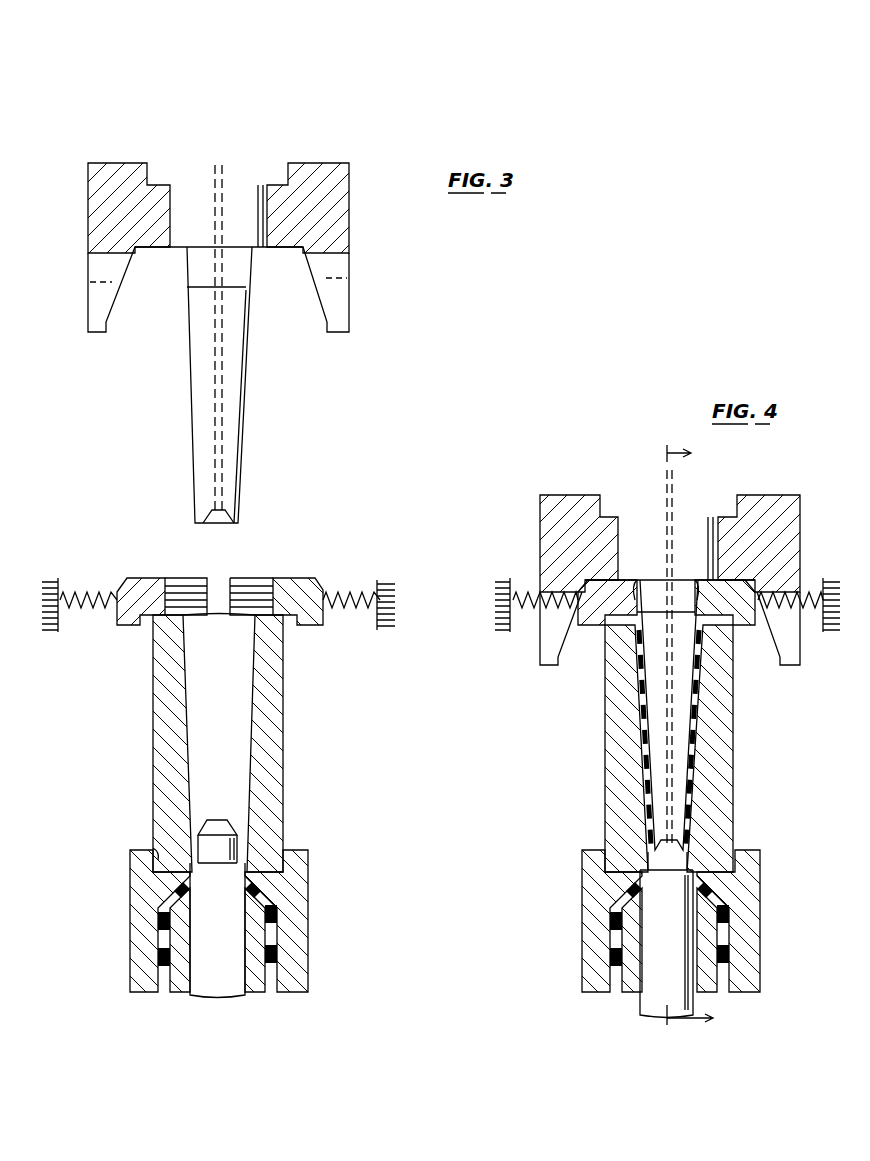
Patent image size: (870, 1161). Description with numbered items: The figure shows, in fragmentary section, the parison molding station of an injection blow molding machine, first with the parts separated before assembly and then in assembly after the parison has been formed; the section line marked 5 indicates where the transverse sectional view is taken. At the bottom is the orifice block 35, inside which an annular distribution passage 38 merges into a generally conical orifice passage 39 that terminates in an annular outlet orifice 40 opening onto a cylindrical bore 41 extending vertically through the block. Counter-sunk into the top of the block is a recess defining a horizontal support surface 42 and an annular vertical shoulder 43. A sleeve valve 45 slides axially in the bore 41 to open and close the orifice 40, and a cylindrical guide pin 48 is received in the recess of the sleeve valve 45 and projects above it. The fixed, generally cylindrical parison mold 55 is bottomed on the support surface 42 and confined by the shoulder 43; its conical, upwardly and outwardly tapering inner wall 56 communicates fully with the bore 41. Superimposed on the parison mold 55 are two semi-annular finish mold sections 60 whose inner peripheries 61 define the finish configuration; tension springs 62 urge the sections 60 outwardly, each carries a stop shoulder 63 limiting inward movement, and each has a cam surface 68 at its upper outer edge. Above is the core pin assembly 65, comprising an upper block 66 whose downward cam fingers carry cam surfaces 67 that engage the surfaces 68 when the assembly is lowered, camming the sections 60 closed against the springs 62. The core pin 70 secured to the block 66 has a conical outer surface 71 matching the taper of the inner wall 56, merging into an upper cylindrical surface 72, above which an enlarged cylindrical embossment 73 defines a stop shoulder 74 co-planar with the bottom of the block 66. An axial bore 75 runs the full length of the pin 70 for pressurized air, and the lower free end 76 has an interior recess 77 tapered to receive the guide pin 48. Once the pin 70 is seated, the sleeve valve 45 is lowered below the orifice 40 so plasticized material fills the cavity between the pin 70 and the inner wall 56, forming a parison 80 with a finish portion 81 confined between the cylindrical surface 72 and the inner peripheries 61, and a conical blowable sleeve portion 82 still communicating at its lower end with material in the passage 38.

In FIG. 3, the orifice block 35 is at (216, 900).
In FIG. 4, the orifice block 35 is at (752, 902).
In FIG. 3, the annular distribution passage 38 is at (158, 936).
In FIG. 3, the orifice passage 39 is at (175, 897).
In FIG. 4, the annular outlet orifice 40 is at (655, 876).
In FIG. 3, the cylindrical bore 41 is at (195, 968).
In FIG. 3, the horizontal support surface 42 is at (150, 862).
In FIG. 3, the annular vertical shoulder 43 is at (155, 845).
In FIG. 3, the sleeve valve 45 is at (230, 923).
In FIG. 4, the sleeve valve 45 is at (680, 923).
In FIG. 3, the guide pin 48 is at (228, 848).
In FIG. 3, the parison mold 55 is at (252, 743).
In FIG. 4, the parison mold 55 is at (731, 751).
In FIG. 3, the conical inner wall 56 is at (258, 692).
In FIG. 3, the finish mold sections 60 is at (136, 590).
In FIG. 3, the inner peripheries 61 is at (232, 580).
In FIG. 3, the tension springs 62 is at (368, 600).
In FIG. 3, the stop shoulder 63 is at (305, 622).
In FIG. 3, the core pin assembly 65 is at (259, 264).
In FIG. 4, the core pin assembly 65 is at (812, 539).
In FIG. 3, the upper block 66 is at (352, 178).
In FIG. 3, the cam surfaces 67 is at (325, 332).
In FIG. 3, the cam surfaces 68 is at (322, 590).
In FIG. 3, the core pin 70 is at (224, 353).
In FIG. 3, the conical outer surface 71 is at (188, 405).
In FIG. 3, the upper cylindrical surface 72 is at (255, 288).
In FIG. 3, the enlarged cylindrical embossment 73 is at (176, 258).
In FIG. 3, the stop shoulder 74 is at (259, 252).
In FIG. 3, the axial bore 75 is at (209, 359).
In FIG. 3, the lower free end 76 is at (237, 516).
In FIG. 3, the interior recess 77 is at (204, 515).
In FIG. 4, the parison 80 is at (680, 660).
In FIG. 4, the finish portion 81 is at (738, 627).
In FIG. 4, the blowable sleeve portion 82 is at (638, 705).
In FIG. 4, the section line 5 is at (699, 734).